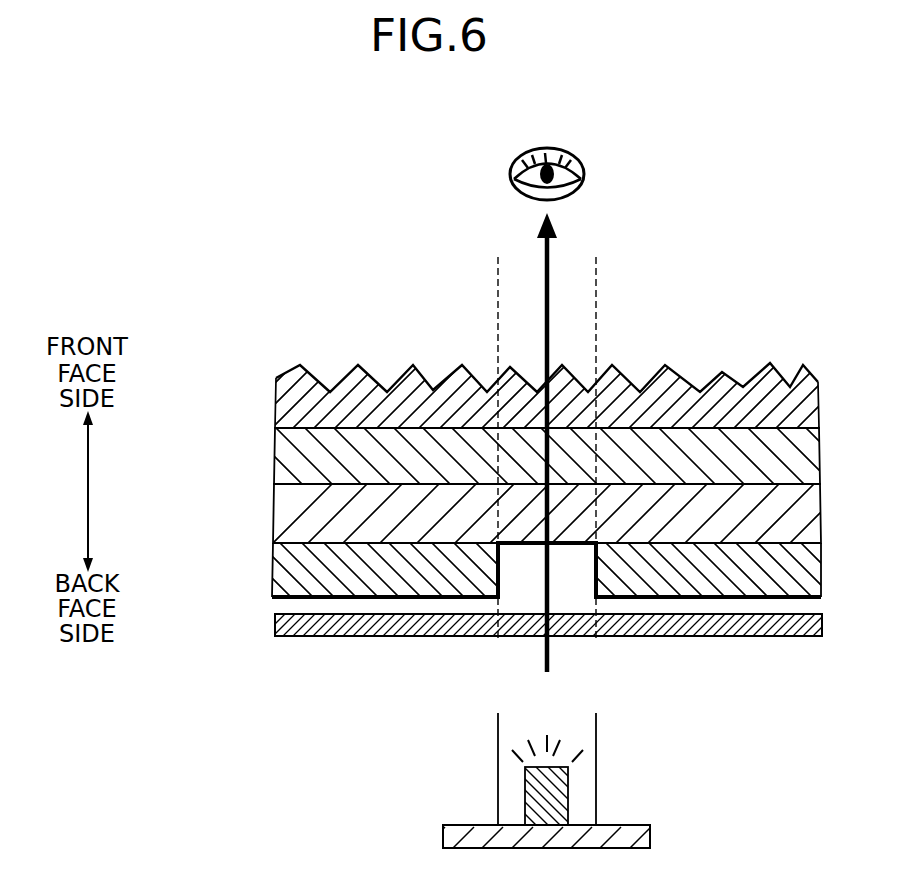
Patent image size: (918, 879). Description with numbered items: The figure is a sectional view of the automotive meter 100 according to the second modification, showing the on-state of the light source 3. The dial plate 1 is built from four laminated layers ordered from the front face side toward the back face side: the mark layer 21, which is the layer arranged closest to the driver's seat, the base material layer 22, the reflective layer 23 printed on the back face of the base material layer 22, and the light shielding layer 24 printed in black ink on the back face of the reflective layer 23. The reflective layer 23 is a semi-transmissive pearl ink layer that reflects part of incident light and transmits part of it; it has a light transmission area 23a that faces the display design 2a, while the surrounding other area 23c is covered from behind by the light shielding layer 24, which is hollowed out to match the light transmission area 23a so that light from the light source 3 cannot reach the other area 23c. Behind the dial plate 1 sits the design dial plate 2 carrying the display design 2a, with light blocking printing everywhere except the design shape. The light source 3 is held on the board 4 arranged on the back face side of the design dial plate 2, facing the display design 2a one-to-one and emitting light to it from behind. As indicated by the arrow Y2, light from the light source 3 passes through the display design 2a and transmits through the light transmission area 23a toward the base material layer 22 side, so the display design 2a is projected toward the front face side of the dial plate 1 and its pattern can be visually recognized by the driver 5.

The automotive meter 100 is at (345, 125).
The driver 5 is at (547, 148).
The arrow Y2 is at (552, 320).
The dial plate 1 is at (540, 497).
The mark layer 21 is at (284, 412).
The base material layer 22 is at (284, 457).
The reflective layer 23 is at (284, 513).
The light transmission area 23a is at (498, 500).
The other area 23c is at (420, 526).
The light shielding layer 24 is at (284, 567).
The design dial plate 2 is at (325, 647).
The display design 2a is at (516, 643).
The light source 3 is at (525, 790).
The board 4 is at (626, 822).